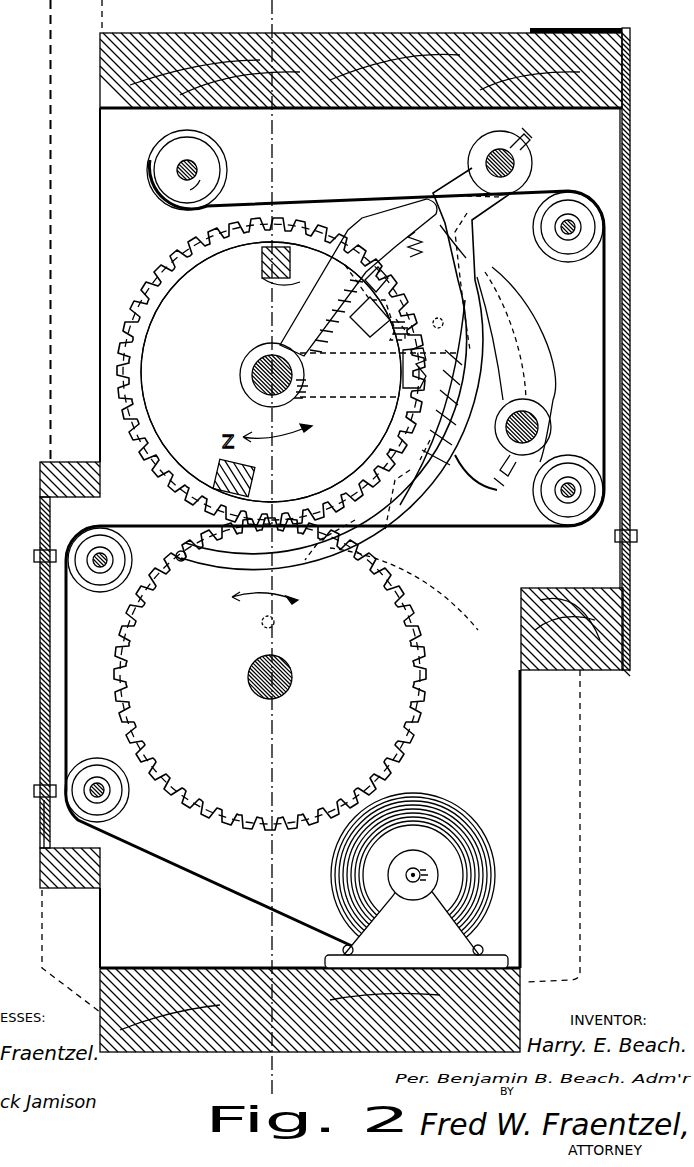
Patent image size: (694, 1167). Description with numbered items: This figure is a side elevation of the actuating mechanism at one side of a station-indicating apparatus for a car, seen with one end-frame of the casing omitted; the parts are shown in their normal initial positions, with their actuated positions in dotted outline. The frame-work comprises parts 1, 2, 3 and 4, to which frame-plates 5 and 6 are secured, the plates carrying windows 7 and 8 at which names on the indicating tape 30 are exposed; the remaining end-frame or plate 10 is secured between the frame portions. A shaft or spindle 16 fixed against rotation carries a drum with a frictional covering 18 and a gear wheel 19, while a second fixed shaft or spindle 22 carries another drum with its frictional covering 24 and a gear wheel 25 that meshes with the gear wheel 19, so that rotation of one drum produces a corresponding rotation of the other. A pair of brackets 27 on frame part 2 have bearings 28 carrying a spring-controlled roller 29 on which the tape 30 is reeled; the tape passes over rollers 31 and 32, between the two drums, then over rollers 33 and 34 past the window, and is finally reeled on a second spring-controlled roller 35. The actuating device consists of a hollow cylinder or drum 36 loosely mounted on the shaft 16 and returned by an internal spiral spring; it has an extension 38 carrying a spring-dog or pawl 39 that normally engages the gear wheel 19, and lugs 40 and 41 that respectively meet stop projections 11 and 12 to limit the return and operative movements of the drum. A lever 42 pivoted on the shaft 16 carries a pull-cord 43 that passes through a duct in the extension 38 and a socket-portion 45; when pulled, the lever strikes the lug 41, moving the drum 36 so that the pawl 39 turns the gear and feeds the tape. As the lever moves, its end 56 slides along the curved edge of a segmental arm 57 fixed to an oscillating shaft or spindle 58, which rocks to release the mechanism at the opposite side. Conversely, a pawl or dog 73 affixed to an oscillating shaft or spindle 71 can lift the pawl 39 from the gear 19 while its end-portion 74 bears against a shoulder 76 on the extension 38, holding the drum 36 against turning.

The frame-work part 1 is at (360, 33).
The frame-work part 2 is at (183, 1052).
The frame-work part 3 is at (612, 620).
The frame-work part 4 is at (40, 478).
The frame-plate 5 is at (632, 140).
The frame-plate 6 is at (40, 824).
The window 7 is at (630, 345).
The window 8 is at (40, 682).
The end-frame or plate 10 is at (316, 1073).
The stop projection 11 is at (262, 263).
The stop projection 12 is at (215, 470).
The shaft or spindle 16 is at (250, 376).
The frictional covering 18 is at (166, 495).
The gear wheel 19 is at (142, 280).
The shaft or spindle 22 is at (248, 683).
The frictional covering 24 is at (420, 652).
The gear wheel 25 is at (135, 702).
The bracket 27 is at (416, 926).
The bearing 28 is at (416, 868).
The spring-controlled roller 29 is at (445, 850).
The indicating tape or sheet 30 is at (340, 205).
The roller 31 is at (118, 802).
The roller 32 is at (102, 585).
The roller 33 is at (576, 470).
The roller 34 is at (570, 250).
The spring-controlled roller 35 is at (208, 160).
The cylinder or drum 36 is at (271, 372).
The extension 38 is at (381, 302).
The spring-dog or pawl 39 is at (405, 380).
The lug 40 is at (300, 285).
The lug 41 is at (360, 332).
The lever 42 is at (358, 277).
The pull-cord or strap 43 is at (478, 488).
The socket-portion 45 is at (410, 254).
The end of lever 56 is at (432, 205).
The segmental arm 57 is at (208, 575).
The oscillating shaft or spindle 58 is at (490, 158).
The oscillating shaft or spindle 71 is at (535, 426).
The pawl or dog 73 is at (532, 340).
The end-portion of pawl 74 is at (494, 290).
The shoulder or projection 76 is at (466, 262).